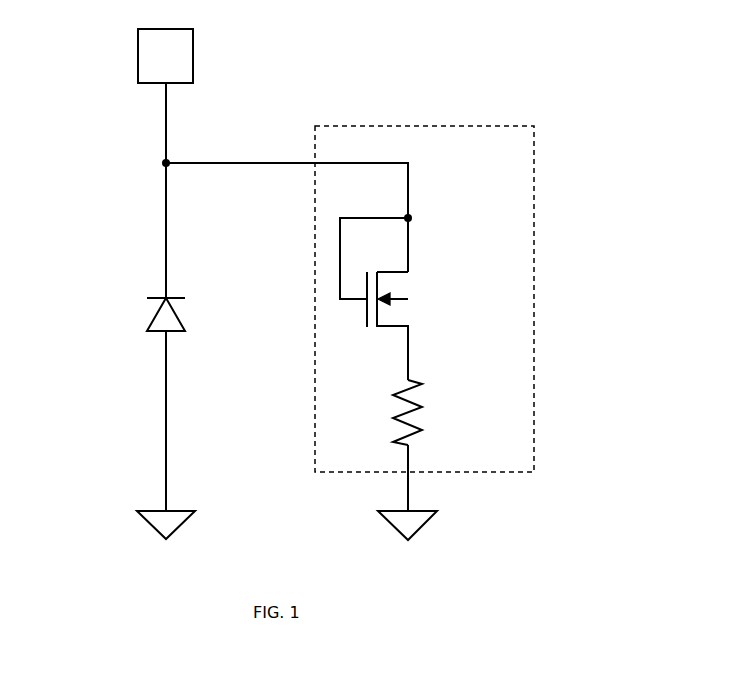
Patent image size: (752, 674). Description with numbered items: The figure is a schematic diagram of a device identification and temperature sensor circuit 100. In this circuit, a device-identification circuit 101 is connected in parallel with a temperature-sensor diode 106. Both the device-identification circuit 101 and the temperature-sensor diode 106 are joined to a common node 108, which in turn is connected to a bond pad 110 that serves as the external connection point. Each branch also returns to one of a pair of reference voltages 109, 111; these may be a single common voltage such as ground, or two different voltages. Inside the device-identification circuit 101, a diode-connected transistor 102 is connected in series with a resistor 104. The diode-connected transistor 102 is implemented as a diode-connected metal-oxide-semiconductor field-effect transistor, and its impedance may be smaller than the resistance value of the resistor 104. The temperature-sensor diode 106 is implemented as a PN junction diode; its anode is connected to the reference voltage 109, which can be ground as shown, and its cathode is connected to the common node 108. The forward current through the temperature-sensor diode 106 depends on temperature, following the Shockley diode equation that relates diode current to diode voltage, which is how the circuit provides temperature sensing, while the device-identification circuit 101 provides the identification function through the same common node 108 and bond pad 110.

The device identification and temperature sensor circuit 100 is at (503, 62).
The device-identification circuit 101 is at (535, 299).
The diode-connected transistor 102 is at (433, 278).
The resistor 104 is at (433, 410).
The temperature-sensor diode 106 is at (152, 316).
The common node 108 is at (164, 163).
The reference voltage 109 is at (150, 527).
The bond pad 110 is at (138, 56).
The reference voltage 111 is at (392, 528).